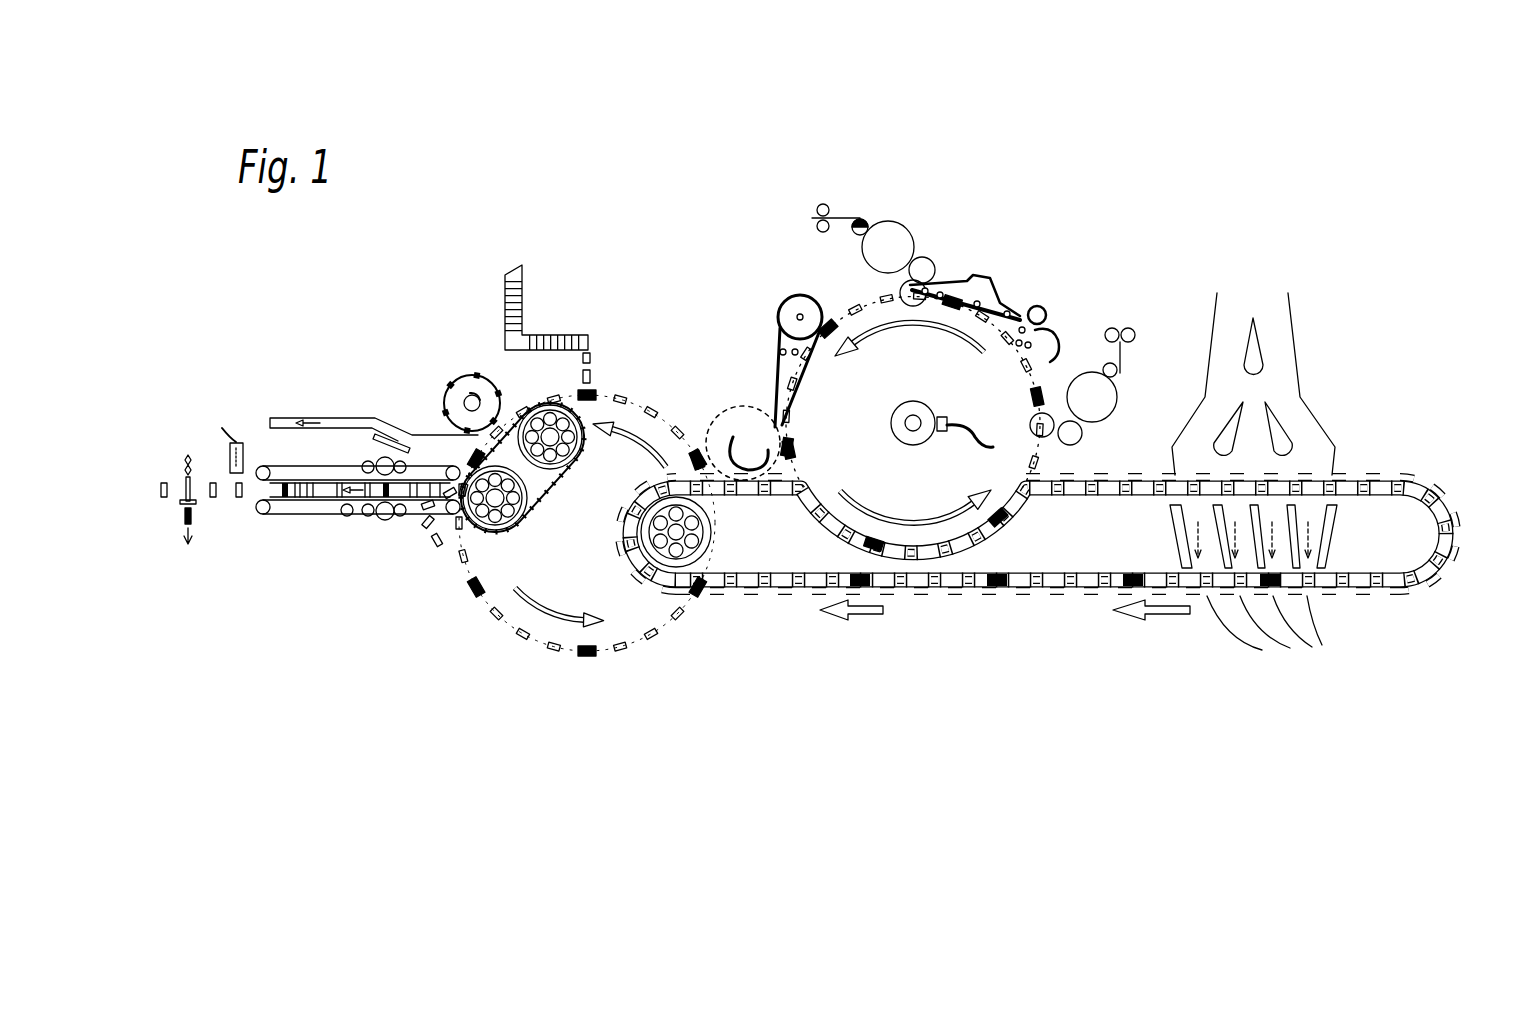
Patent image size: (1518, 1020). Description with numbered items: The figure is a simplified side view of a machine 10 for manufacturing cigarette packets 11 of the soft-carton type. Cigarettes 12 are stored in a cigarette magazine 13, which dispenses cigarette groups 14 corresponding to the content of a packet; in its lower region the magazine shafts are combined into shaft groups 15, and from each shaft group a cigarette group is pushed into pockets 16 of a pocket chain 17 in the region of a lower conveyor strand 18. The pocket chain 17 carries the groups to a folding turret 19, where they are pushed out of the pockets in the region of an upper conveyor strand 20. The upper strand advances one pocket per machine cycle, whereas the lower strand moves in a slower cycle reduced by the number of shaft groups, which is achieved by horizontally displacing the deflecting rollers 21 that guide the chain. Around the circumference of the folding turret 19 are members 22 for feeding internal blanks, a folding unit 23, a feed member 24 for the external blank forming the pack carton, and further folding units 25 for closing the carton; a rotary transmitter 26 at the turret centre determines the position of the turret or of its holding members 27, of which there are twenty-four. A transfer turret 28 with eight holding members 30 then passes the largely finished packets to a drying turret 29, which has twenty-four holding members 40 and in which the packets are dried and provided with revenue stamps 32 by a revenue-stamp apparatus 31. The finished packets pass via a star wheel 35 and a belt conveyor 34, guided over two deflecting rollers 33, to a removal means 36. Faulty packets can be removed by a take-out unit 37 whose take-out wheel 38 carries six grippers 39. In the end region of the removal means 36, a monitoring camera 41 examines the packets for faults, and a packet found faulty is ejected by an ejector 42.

The machine 10 is at (1112, 183).
The cigarette packets 11 is at (265, 516).
The cigarettes 12 is at (1270, 293).
The cigarette magazine 13 is at (1295, 322).
The cigarette groups 14 is at (1000, 588).
The shaft groups 15 is at (1273, 596).
The pockets 16 is at (1262, 650).
The pocket chain 17 is at (1460, 510).
The lower conveyor strand 18 is at (957, 607).
The folding turret 19 is at (958, 272).
The upper conveyor strand 20 is at (1145, 466).
The deflecting rollers 21 is at (700, 593).
The members for feeding internal blanks 22 is at (1120, 382).
The folding unit 23 is at (1022, 297).
The feed member for the external blank 24 is at (877, 213).
The further folding units 25 is at (772, 305).
The rotary transmitter 26 is at (918, 400).
The holding members 27 is at (853, 300).
The transfer turret 28 is at (712, 410).
The drying turret 29 is at (587, 660).
The holding members 30 is at (740, 408).
The revenue-stamp apparatus 31 is at (545, 294).
The revenue stamps 32 is at (592, 376).
The deflecting rollers 33 is at (582, 453).
The belt conveyor 34 is at (547, 490).
The star wheel 35 is at (443, 523).
The removal means 36 is at (350, 538).
The take-out unit 37 is at (355, 410).
The take-out wheel 38 is at (458, 367).
The grippers 39 is at (483, 376).
The holding members 40 is at (553, 648).
The monitoring camera 41 is at (240, 436).
The ejector 42 is at (183, 450).